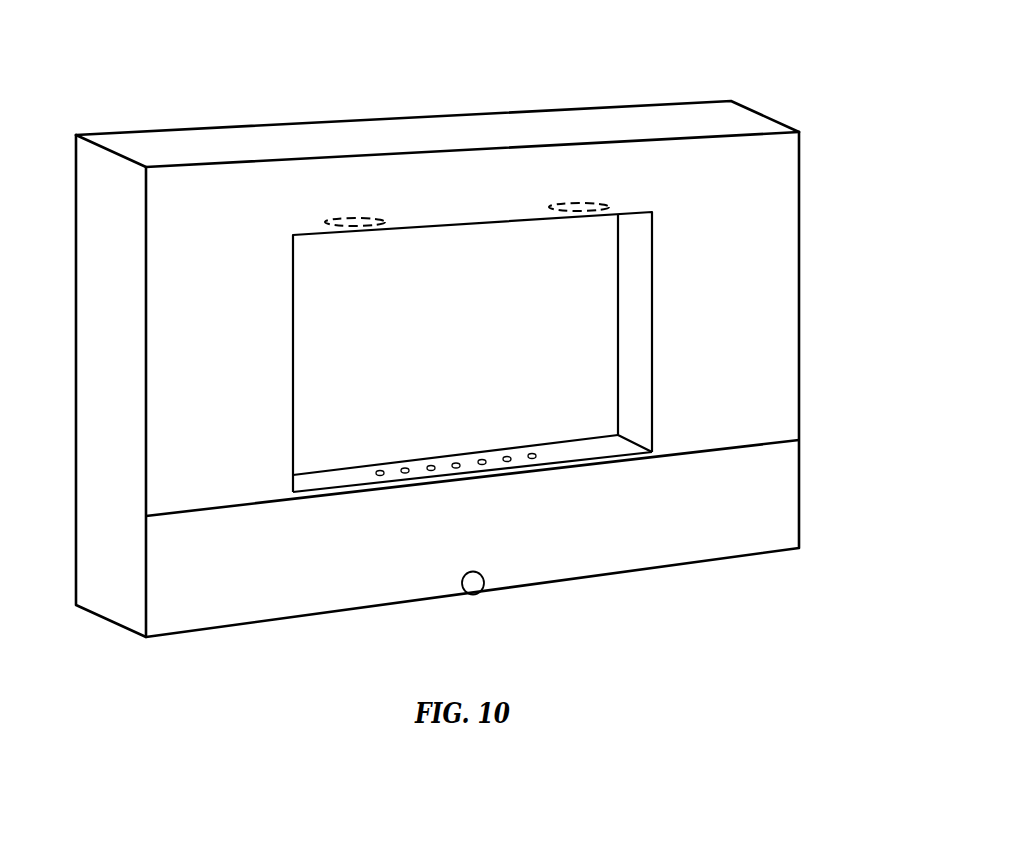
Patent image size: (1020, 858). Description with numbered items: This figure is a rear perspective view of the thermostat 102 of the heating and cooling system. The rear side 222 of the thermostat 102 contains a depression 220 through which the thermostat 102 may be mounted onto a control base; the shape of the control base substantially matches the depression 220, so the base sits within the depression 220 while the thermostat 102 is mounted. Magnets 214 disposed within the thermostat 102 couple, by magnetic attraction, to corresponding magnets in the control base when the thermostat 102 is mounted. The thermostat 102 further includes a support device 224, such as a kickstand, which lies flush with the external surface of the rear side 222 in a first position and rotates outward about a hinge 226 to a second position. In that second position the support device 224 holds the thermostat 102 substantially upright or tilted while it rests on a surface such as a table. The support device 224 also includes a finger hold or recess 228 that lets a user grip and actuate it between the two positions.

The thermostat 102 is at (641, 50).
The magnets 214 is at (360, 218).
The depression 220 is at (433, 385).
The rear side 222 is at (762, 192).
The support device 224 is at (772, 493).
The hinge 226 is at (765, 441).
The finger hold or recess 228 is at (473, 588).